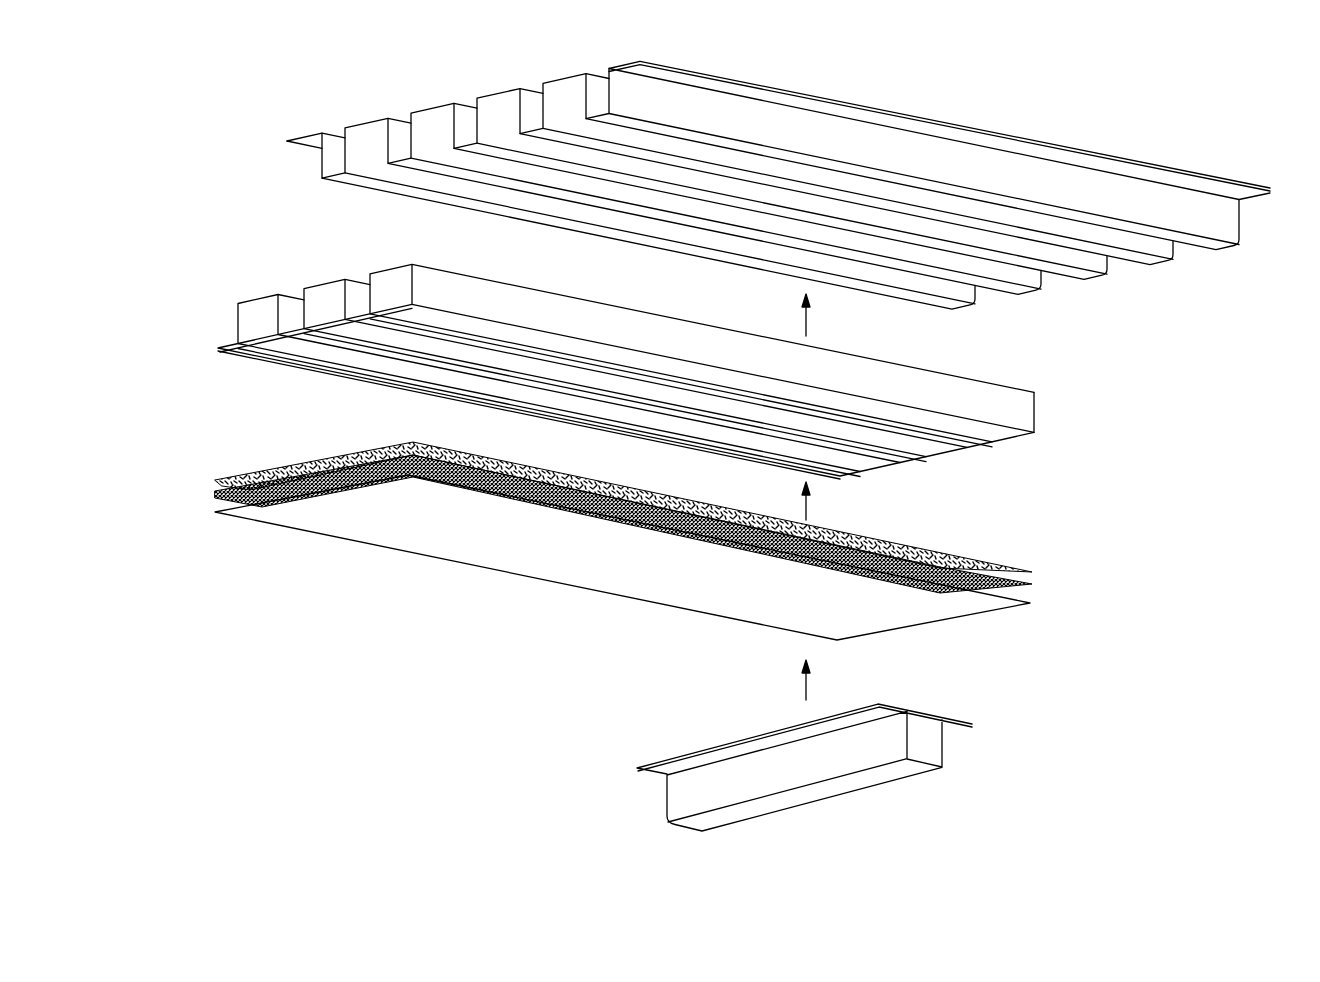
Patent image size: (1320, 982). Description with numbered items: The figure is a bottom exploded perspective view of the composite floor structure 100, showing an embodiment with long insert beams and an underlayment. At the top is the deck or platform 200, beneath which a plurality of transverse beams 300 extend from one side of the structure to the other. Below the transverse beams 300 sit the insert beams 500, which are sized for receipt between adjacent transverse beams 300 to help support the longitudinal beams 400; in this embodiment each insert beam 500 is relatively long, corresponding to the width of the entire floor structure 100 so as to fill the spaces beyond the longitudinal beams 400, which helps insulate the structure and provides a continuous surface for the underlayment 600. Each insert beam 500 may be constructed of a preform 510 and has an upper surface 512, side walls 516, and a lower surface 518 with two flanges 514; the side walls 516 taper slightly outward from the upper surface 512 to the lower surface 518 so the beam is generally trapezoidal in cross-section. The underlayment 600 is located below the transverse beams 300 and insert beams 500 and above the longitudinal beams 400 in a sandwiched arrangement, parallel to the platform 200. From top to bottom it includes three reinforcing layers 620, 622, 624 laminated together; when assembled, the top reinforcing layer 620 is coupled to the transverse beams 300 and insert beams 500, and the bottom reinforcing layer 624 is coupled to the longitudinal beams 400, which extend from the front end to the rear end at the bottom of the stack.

The composite floor structure 100 is at (1180, 135).
The deck or platform 200 is at (778, 163).
The transverse beams 300 is at (1068, 183).
The longitudinal beams 400 is at (882, 745).
The insert beams 500 is at (604, 358).
The preform 510 is at (253, 318).
The upper surface 512 is at (253, 297).
The flanges 514 is at (262, 353).
The side walls 516 is at (238, 315).
The lower surface 518 is at (305, 345).
The underlayment 600 is at (643, 531).
The top reinforcing layer 620 is at (233, 478).
The reinforcing layer 622 is at (220, 498).
The bottom reinforcing layer 624 is at (262, 516).